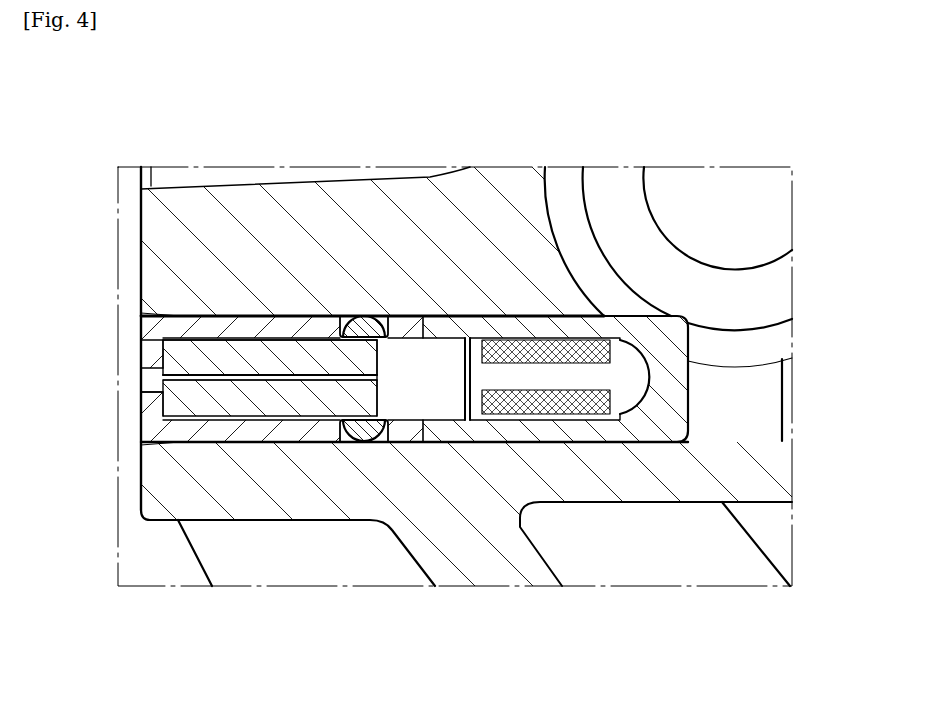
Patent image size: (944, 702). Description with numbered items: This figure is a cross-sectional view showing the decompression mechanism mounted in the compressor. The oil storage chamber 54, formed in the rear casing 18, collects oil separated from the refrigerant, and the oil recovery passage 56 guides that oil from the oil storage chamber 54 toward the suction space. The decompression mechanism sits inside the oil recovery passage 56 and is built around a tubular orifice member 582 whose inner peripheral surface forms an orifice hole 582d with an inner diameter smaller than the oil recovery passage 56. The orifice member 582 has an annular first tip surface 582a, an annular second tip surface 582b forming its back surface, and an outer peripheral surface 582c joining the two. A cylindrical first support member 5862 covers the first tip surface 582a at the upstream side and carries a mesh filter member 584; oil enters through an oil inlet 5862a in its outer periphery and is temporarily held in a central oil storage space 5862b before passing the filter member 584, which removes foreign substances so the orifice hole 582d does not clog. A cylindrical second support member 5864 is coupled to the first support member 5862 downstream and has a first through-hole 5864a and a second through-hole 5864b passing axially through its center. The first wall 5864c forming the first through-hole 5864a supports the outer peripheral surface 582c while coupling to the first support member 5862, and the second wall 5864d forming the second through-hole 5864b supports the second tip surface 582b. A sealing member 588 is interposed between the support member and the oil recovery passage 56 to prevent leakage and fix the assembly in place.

The rear casing 18 is at (484, 210).
The oil storage chamber 54 is at (711, 207).
The oil recovery passage 56 is at (733, 437).
The orifice member 582 is at (329, 345).
The first tip surface 582a is at (378, 352).
The second tip surface 582b is at (157, 343).
The outer peripheral surface 582c is at (220, 342).
The orifice hole 582d is at (275, 378).
The filter member 584 is at (585, 410).
The sealing member 588 is at (362, 432).
The first support member 5862 is at (676, 389).
The oil inlet 5862a is at (553, 419).
The oil storage space 5862b is at (483, 378).
The second support member 5864 is at (148, 433).
The first through-hole 5864a is at (193, 410).
The second through-hole 5864b is at (148, 386).
The first wall 5864c is at (262, 432).
The second wall 5864d is at (147, 407).